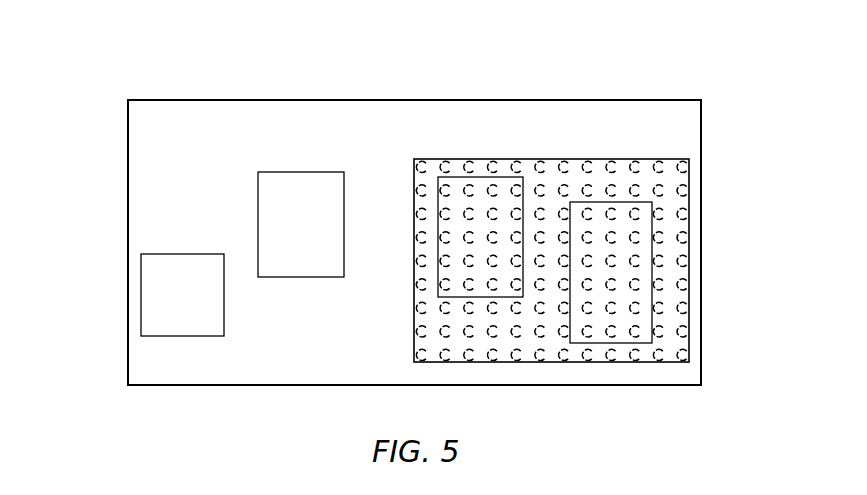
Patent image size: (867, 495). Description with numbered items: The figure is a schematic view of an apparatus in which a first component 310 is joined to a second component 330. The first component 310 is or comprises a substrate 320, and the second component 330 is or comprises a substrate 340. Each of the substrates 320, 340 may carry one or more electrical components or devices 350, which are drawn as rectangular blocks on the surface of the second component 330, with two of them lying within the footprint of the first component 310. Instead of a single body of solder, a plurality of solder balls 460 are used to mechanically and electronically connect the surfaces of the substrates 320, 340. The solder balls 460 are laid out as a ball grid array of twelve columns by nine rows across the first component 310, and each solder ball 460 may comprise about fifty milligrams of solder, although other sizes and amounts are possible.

The second component 330 is at (108, 101).
The first component 310 is at (686, 153).
The substrate 340 is at (701, 243).
The substrate 320 is at (689, 262).
The solder balls 460 is at (689, 307).
The electrical components or devices 350 is at (165, 306).